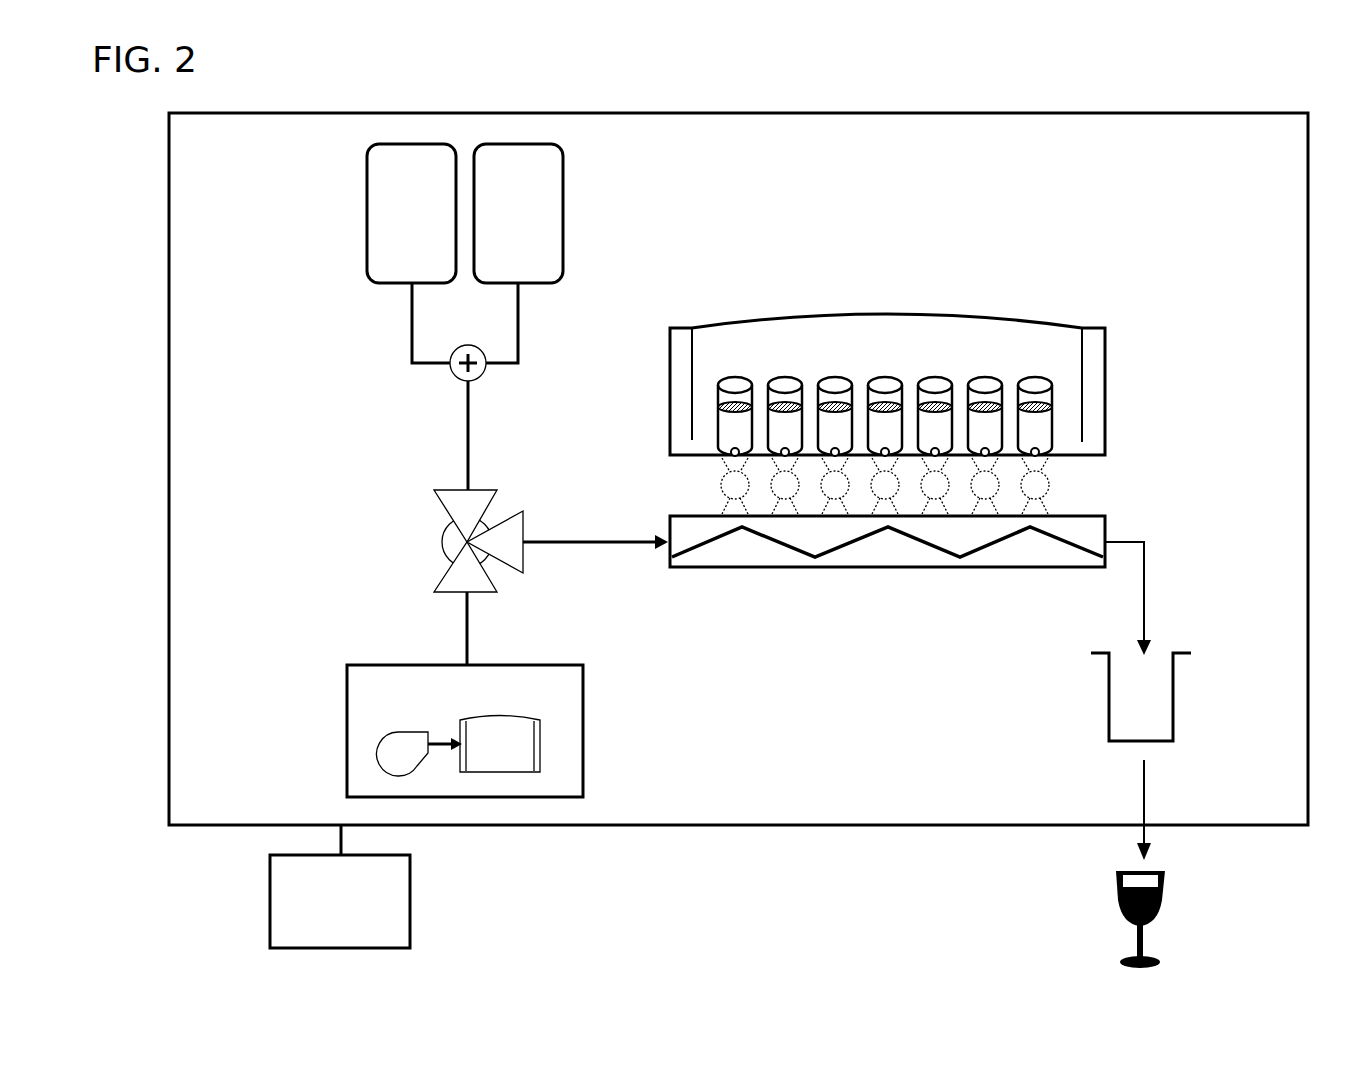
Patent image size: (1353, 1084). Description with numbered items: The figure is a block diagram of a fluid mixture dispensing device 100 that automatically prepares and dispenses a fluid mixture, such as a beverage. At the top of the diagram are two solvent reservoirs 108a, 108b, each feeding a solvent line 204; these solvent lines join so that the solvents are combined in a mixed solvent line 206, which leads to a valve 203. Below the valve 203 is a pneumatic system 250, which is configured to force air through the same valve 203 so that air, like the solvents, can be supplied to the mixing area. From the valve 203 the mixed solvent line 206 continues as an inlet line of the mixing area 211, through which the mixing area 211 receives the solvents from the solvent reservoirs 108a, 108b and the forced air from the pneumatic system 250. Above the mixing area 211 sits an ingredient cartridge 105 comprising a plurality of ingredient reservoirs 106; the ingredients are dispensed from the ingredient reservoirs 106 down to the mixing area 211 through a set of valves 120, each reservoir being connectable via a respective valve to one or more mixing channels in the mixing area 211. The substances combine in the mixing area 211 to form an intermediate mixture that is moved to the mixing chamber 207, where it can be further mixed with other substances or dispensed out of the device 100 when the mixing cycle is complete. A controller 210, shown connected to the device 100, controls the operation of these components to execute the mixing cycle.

The fluid mixture dispensing device 100 is at (1226, 179).
The solvent reservoir 108a is at (447, 229).
The solvent reservoir 108b is at (555, 229).
The solvent line 204 is at (520, 341).
The mixed solvent line 206 is at (467, 422).
The valve 203 is at (503, 497).
The pneumatic system 250 is at (486, 702).
The ingredient cartridge 105 is at (893, 354).
The ingredient reservoirs 106 is at (987, 378).
The set of valves 120 is at (1093, 480).
The mixing area 211 is at (938, 568).
The mixing chamber 207 is at (1161, 731).
The controller 210 is at (320, 931).